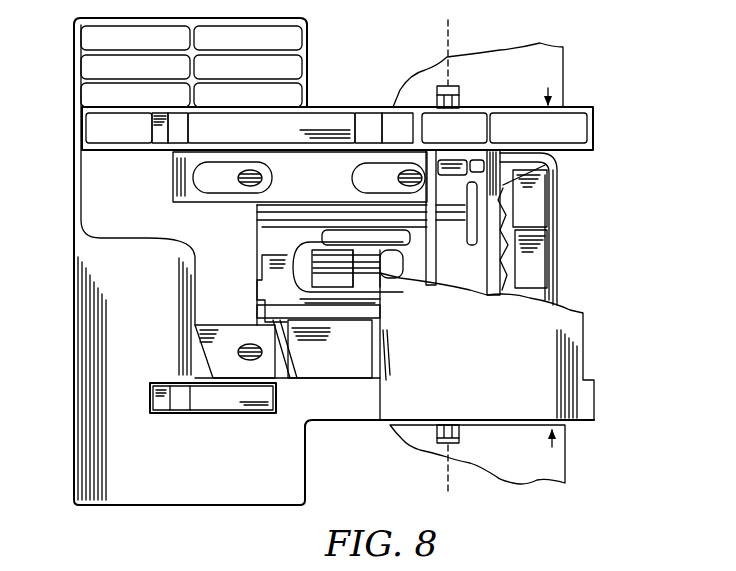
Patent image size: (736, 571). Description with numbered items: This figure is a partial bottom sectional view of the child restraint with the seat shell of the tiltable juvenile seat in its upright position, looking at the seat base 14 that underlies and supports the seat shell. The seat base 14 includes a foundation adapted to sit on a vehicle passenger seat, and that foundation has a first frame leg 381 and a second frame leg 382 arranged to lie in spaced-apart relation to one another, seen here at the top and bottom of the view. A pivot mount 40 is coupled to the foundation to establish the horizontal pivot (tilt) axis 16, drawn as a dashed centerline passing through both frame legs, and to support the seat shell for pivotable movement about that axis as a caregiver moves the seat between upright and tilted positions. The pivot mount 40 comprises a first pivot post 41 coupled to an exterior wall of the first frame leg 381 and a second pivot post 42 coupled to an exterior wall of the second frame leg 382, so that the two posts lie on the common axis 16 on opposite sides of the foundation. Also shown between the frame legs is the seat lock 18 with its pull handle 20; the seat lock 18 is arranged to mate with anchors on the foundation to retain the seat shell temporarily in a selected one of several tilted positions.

The seat base 14 is at (334, 261).
The pivot (tilt) axis 16 is at (450, 50).
The seat lock 18 is at (563, 201).
The pull handle 20 is at (556, 258).
The pivot mount 40 is at (535, 459).
The first pivot post 41 is at (462, 102).
The second pivot post 42 is at (460, 432).
The first frame leg 381 is at (565, 72).
The second frame leg 382 is at (560, 456).